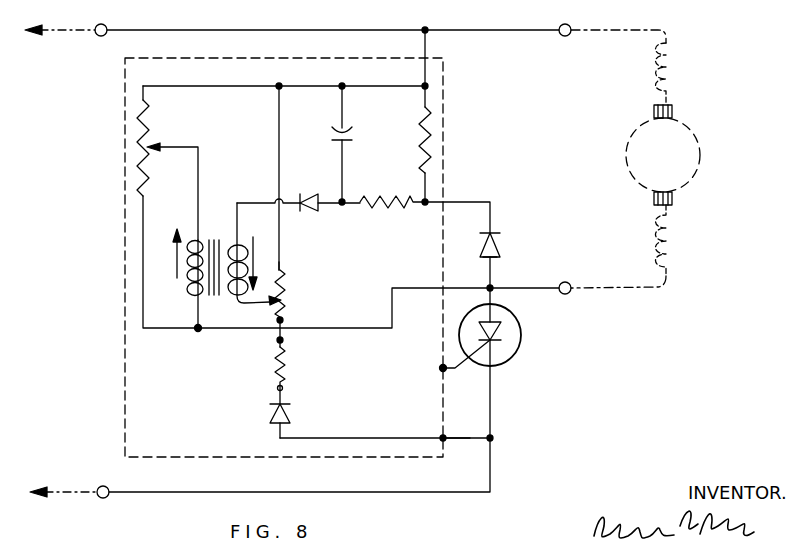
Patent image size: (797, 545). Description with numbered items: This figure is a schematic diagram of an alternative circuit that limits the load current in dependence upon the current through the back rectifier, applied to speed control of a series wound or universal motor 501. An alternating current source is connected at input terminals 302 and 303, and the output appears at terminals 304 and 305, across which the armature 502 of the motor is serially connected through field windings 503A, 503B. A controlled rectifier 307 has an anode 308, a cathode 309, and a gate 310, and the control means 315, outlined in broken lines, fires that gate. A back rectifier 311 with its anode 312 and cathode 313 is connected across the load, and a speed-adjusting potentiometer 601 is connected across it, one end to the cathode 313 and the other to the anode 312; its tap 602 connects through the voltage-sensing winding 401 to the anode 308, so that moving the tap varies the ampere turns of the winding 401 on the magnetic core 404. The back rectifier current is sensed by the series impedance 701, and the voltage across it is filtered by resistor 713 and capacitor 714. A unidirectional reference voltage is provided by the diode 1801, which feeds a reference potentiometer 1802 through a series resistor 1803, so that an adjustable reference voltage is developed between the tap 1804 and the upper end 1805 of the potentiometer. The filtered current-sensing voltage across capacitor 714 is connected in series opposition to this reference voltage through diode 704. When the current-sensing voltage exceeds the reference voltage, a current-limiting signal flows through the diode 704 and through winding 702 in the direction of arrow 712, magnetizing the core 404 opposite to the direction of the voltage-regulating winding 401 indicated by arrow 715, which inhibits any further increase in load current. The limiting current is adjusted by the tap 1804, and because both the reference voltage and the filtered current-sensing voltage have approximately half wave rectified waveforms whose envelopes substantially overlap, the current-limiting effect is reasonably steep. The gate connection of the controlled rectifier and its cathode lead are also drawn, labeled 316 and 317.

The input terminal 302 is at (101, 37).
The input terminal 303 is at (106, 498).
The output terminal 304 is at (567, 37).
The output terminal 305 is at (567, 295).
The control means 315 is at (213, 81).
The potentiometer 601 is at (149, 121).
The tap 602 is at (155, 145).
The voltage-sensing winding 401 is at (192, 293).
The magnetic core 404 is at (218, 292).
The winding 702 is at (236, 243).
The arrow 715 is at (176, 262).
The arrow 712 is at (253, 238).
The diode 704 is at (308, 195).
The filter resistor 713 is at (380, 207).
The filter capacitor 714 is at (337, 139).
The series impedance 701 is at (422, 125).
The reference potentiometer 1802 is at (288, 290).
The upper end of potentiometer 1805 is at (283, 272).
The tap 1804 is at (268, 306).
The series resistor 1803 is at (287, 370).
The diode 1801 is at (290, 412).
The back rectifier 311 is at (507, 250).
The cathode 313 is at (500, 234).
The anode 312 is at (501, 259).
The controlled rectifier 307 is at (582, 348).
The anode 308 is at (501, 313).
The cathode 309 is at (506, 357).
The gate 310 is at (461, 345).
The gate junction 316 is at (446, 371).
The cathode lead 317 is at (457, 438).
The universal motor 501 is at (747, 133).
The armature 502 is at (676, 118).
The field winding 503A is at (676, 58).
The field winding 503B is at (680, 247).